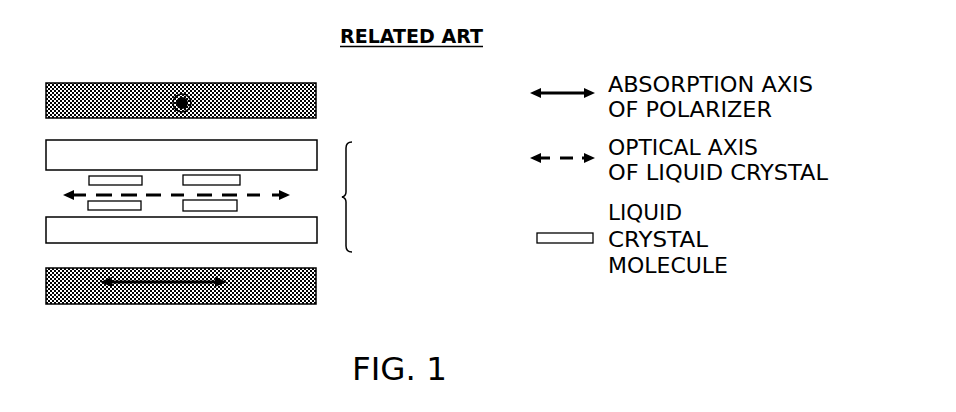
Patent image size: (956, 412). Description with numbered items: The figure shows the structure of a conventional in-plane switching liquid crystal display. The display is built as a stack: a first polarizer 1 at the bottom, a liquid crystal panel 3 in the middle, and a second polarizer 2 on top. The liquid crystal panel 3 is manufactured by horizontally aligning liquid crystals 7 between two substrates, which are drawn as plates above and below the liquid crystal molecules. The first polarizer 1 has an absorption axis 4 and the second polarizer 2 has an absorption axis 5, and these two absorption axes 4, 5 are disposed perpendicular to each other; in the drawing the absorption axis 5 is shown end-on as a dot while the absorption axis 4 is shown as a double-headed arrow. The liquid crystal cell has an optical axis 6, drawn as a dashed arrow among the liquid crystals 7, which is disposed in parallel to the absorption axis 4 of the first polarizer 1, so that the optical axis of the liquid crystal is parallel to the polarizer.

The first polarizer 1 is at (271, 285).
The second polarizer 2 is at (269, 103).
The liquid crystal panel 3 is at (268, 196).
The absorption axis of the first polarizer 4 is at (193, 287).
The absorption axis of the second polarizer 5 is at (227, 104).
The optical axis of the liquid crystal cell 6 is at (193, 197).
The liquid crystals 7 is at (177, 192).